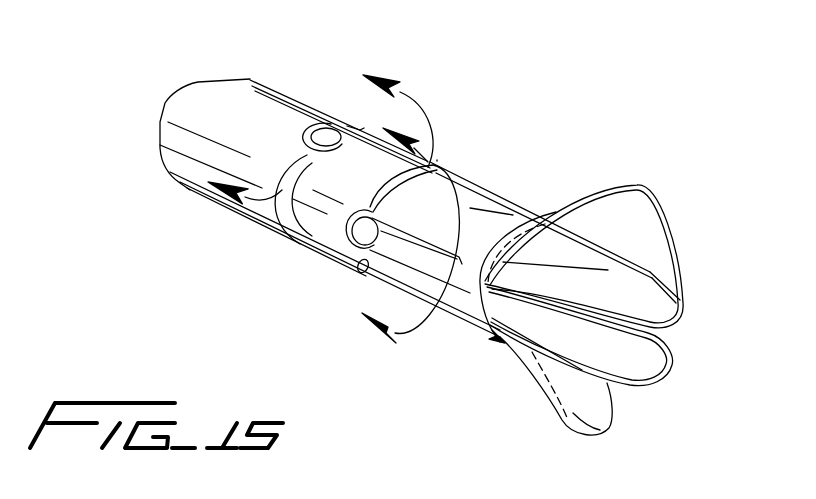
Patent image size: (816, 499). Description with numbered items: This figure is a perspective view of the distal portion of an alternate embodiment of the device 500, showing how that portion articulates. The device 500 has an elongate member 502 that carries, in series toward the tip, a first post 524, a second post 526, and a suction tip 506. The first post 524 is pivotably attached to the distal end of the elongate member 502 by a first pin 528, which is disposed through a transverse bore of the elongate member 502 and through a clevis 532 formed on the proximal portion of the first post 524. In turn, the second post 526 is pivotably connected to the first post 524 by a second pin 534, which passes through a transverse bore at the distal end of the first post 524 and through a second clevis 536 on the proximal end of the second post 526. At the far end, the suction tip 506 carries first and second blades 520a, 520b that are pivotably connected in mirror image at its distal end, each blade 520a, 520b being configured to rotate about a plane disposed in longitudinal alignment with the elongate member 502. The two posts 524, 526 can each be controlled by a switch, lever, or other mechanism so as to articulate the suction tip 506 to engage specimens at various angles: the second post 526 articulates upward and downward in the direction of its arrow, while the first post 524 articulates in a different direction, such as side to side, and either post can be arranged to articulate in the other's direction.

The device 500 is at (502, 104).
The elongate member 502 is at (197, 157).
The suction tip 506 is at (530, 165).
The first blade 520a is at (607, 240).
The second blade 520b is at (570, 417).
The first post 524 is at (325, 232).
The second post 526 is at (468, 303).
The first pin 528 is at (327, 137).
The clevis 532 is at (303, 130).
The second pin 534 is at (367, 240).
The second clevis 536 is at (327, 234).